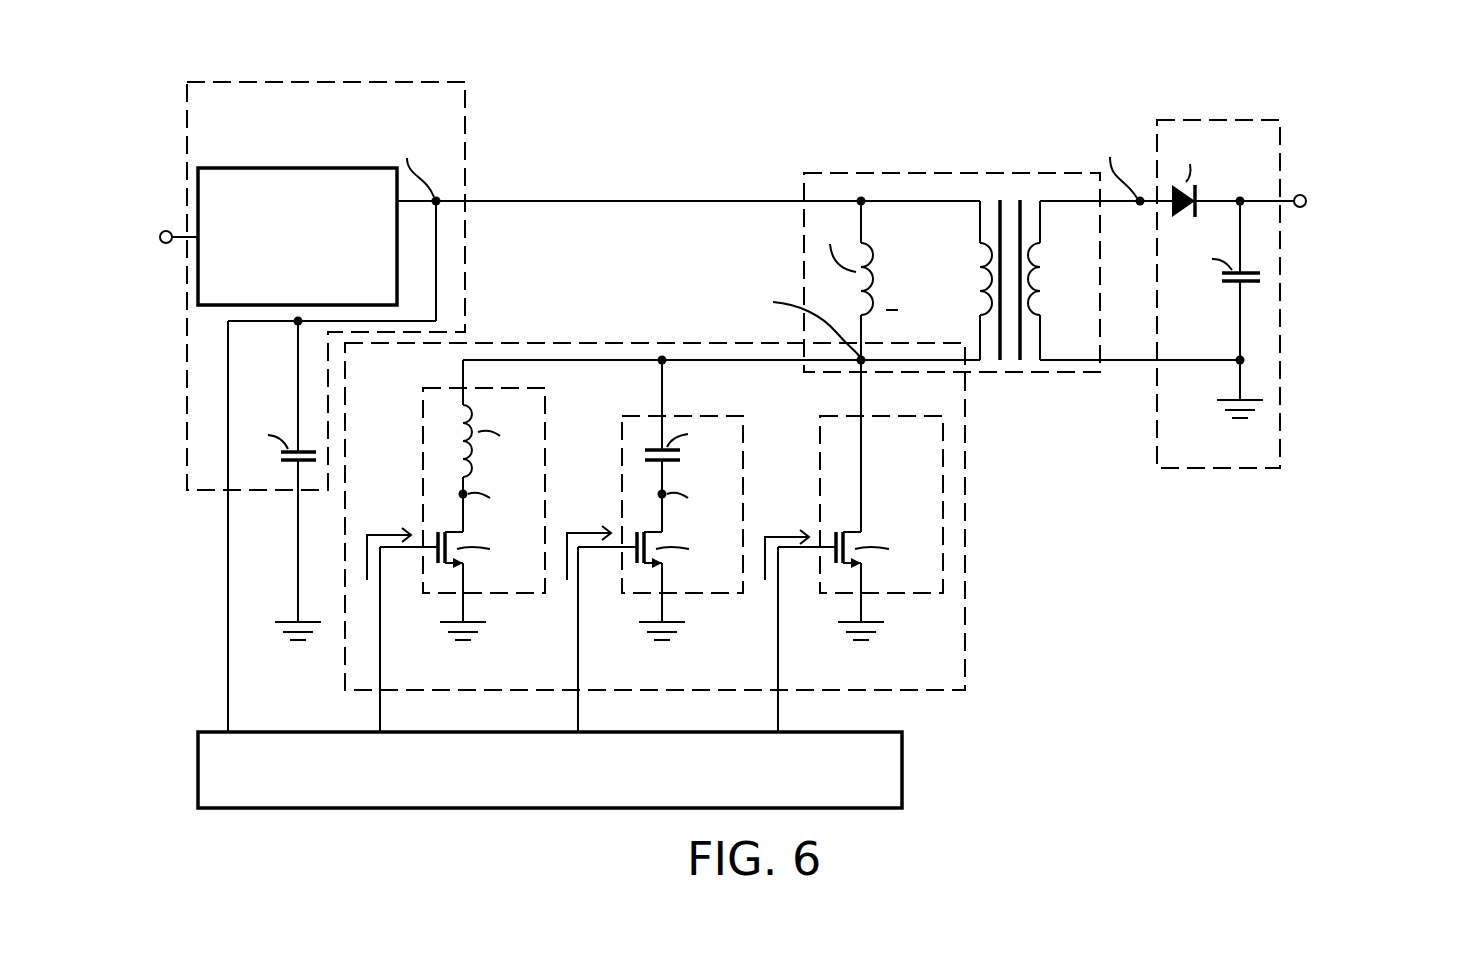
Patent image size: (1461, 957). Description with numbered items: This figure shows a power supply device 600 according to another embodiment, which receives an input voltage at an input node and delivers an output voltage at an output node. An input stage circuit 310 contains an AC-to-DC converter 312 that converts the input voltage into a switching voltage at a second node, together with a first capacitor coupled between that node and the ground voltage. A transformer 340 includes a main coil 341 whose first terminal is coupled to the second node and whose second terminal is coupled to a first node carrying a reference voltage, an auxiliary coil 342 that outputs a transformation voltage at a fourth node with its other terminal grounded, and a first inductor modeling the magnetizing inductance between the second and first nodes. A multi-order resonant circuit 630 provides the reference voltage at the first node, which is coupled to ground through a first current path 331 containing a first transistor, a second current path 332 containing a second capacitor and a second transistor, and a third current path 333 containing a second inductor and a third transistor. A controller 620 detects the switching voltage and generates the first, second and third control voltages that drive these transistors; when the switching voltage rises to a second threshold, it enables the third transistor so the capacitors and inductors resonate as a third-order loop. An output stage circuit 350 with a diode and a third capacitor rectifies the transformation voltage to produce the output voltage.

The power supply device 600 is at (133, 80).
The input stage circuit 310 is at (188, 82).
The AC-to-DC converter 312 is at (200, 168).
The multi-order resonant circuit 630 is at (515, 343).
The first current path 331 is at (892, 413).
The second current path 332 is at (692, 413).
The third current path 333 is at (545, 392).
The transformer 340 is at (804, 173).
The main coil 341 is at (975, 272).
The auxiliary coil 342 is at (1045, 272).
The output stage circuit 350 is at (1157, 120).
The controller 620 is at (902, 770).